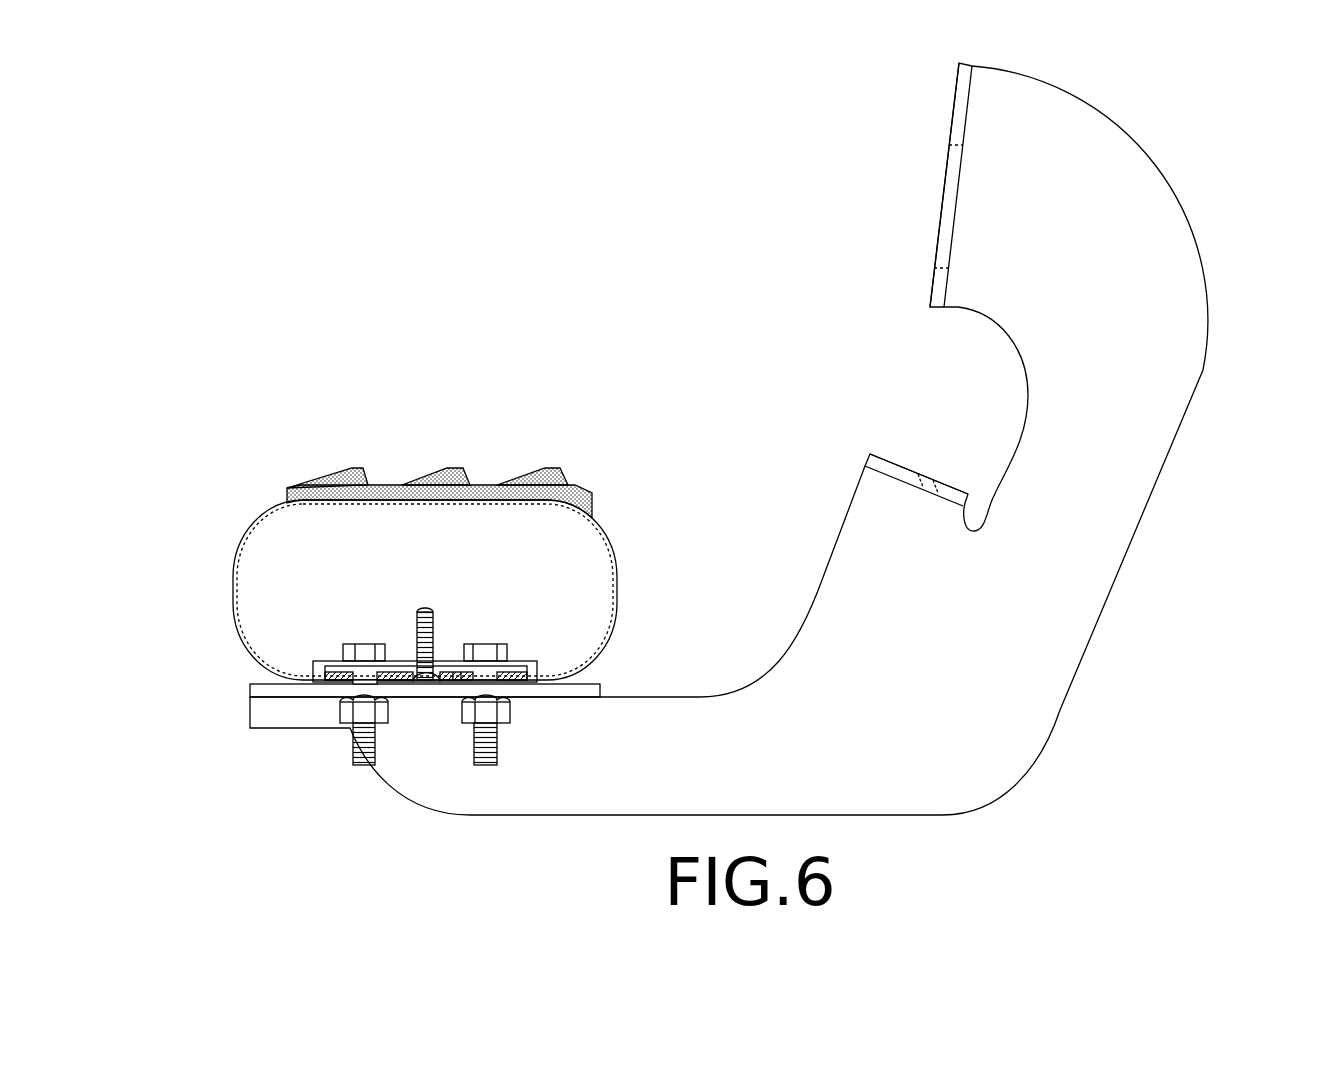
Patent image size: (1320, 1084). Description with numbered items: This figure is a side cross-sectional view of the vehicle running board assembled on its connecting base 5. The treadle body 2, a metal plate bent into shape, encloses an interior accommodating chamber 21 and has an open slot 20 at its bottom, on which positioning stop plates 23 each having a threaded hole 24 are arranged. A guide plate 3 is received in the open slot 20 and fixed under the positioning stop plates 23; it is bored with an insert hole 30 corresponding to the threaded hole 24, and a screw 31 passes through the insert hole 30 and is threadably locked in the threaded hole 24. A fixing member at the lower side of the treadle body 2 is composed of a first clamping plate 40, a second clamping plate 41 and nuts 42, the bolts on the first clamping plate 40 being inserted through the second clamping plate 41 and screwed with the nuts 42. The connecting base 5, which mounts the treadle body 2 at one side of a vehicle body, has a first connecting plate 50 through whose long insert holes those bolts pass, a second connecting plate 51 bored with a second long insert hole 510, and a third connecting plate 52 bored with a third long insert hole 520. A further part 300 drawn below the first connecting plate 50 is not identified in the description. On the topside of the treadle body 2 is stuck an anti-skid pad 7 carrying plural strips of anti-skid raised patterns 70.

The treadle body 2 is at (612, 556).
The accommodating chamber 21 is at (268, 633).
The positioning stop plate 23 is at (525, 660).
The threaded hole 24 is at (457, 672).
The open slot 20 is at (347, 677).
The guide plate 3 is at (429, 531).
The insert hole 30 is at (405, 667).
The screw 31 is at (423, 672).
The first clamping plate 40 is at (540, 662).
The second clamping plate 41 is at (507, 680).
The nut 42 is at (383, 715).
The nut 300 is at (362, 755).
The first connecting plate 50 is at (600, 687).
The connecting base 5 is at (1151, 493).
The second connecting plate 51 is at (893, 466).
The second long insert hole 510 is at (936, 484).
The third connecting plate 52 is at (955, 100).
The third long insert hole 520 is at (950, 215).
The anti-skid pad 7 is at (587, 498).
The anti-skid raised patterns 70 is at (545, 468).